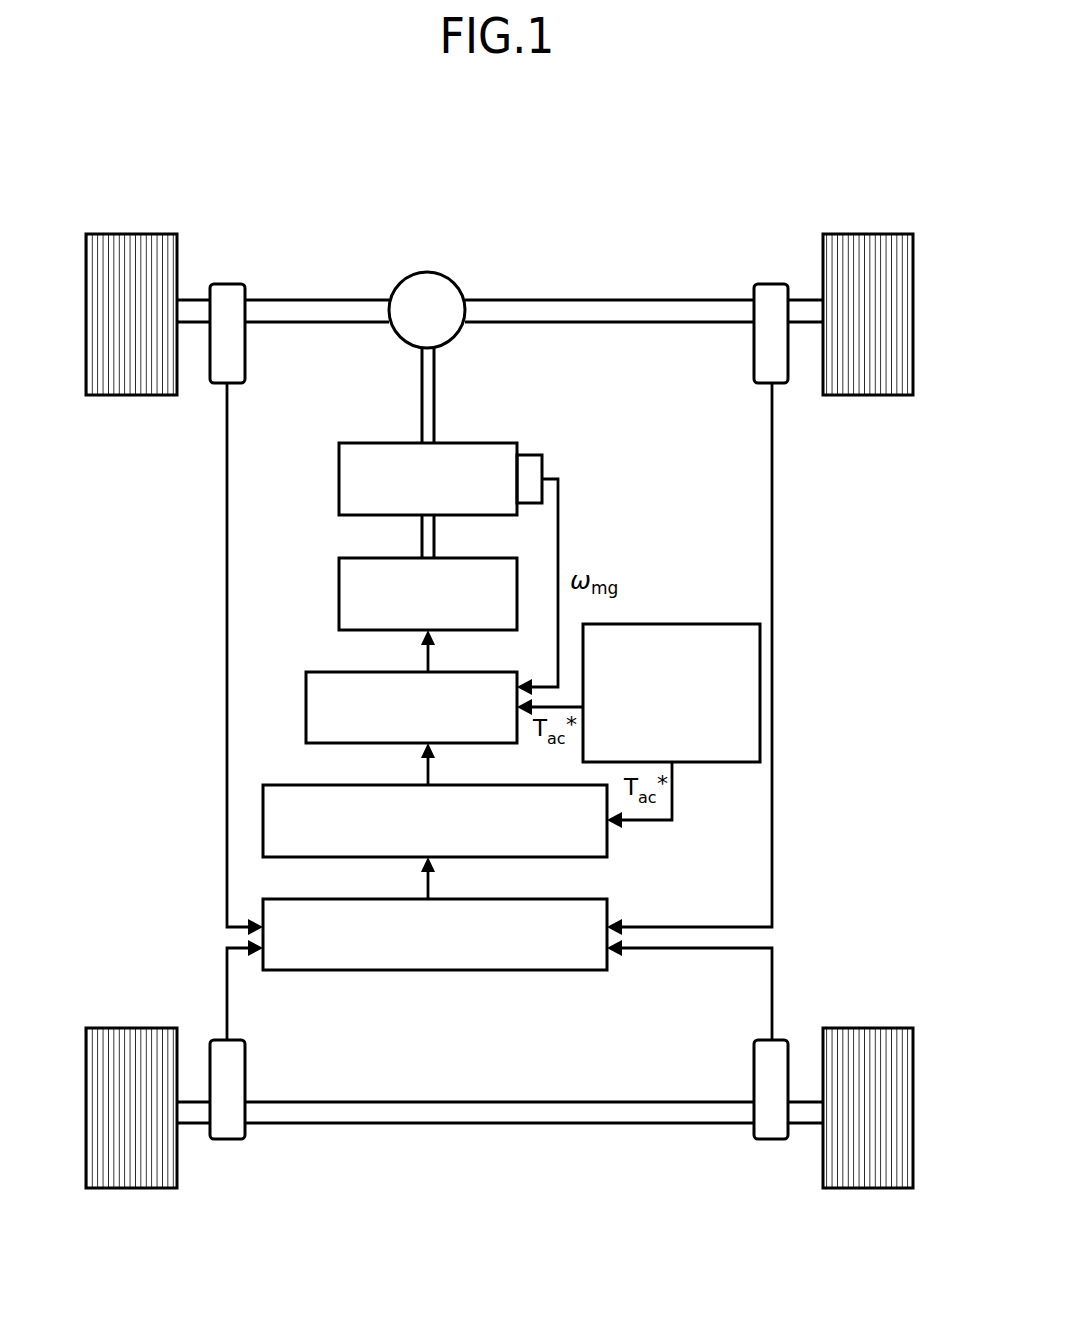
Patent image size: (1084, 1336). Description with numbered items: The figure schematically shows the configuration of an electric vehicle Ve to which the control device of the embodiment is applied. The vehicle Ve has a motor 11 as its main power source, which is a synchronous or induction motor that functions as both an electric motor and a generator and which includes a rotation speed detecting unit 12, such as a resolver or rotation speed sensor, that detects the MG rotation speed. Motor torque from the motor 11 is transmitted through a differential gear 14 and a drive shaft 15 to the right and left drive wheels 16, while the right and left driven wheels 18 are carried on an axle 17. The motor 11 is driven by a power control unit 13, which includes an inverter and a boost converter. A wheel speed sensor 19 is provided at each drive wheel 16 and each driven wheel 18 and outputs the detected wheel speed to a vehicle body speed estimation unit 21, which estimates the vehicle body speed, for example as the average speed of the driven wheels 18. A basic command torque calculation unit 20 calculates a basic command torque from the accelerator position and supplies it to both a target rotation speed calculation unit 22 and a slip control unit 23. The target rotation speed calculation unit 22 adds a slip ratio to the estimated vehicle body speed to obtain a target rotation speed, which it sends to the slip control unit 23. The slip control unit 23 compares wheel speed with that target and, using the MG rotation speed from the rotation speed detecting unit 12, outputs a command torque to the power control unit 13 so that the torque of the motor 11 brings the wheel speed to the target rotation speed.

The electric vehicle Ve is at (757, 137).
The motor 11 is at (462, 443).
The rotation speed detecting unit 12 is at (532, 455).
The power control unit 13 is at (462, 558).
The differential gear 14 is at (432, 272).
The drive shaft 15 is at (652, 298).
The drive wheel 16 is at (133, 233).
The axle 17 is at (651, 1125).
The driven wheel 18 is at (133, 1189).
The wheel speed sensor 19 is at (234, 283).
The basic command torque calculation unit 20 is at (671, 624).
The vehicle body speed estimation unit 21 is at (462, 899).
The target rotation speed calculation unit 22 is at (462, 785).
The slip control unit 23 is at (462, 672).